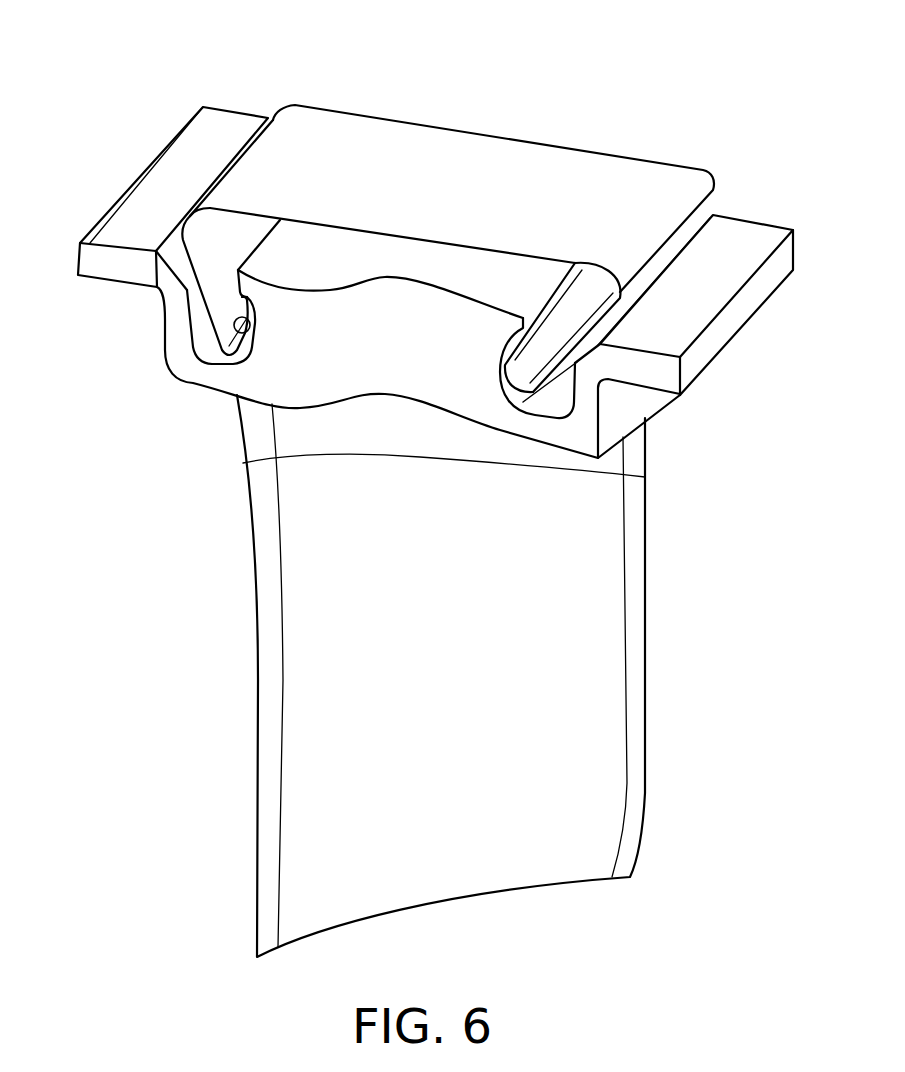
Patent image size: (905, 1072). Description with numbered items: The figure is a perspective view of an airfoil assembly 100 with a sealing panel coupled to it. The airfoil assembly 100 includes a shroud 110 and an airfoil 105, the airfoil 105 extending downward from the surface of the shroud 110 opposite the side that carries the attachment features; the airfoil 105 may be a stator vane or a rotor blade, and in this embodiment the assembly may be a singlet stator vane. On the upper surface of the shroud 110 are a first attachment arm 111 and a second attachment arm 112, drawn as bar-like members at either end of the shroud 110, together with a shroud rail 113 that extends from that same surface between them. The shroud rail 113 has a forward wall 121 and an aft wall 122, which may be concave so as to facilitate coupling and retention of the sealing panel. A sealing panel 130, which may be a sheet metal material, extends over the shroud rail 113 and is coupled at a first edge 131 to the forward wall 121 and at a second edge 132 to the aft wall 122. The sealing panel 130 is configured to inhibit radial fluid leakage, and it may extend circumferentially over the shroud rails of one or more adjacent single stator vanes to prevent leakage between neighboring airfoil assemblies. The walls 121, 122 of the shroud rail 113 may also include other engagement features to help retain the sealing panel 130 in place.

The airfoil assembly 100 is at (110, 85).
The airfoil 105 is at (247, 730).
The shroud 110 is at (150, 328).
The first attachment arm 111 is at (227, 122).
The second attachment arm 112 is at (733, 230).
The shroud rail 113 is at (398, 321).
The forward wall 121 is at (247, 296).
The aft wall 122 is at (513, 347).
The sealing panel 130 is at (498, 148).
The first edge 131 is at (248, 333).
The second edge 132 is at (547, 320).